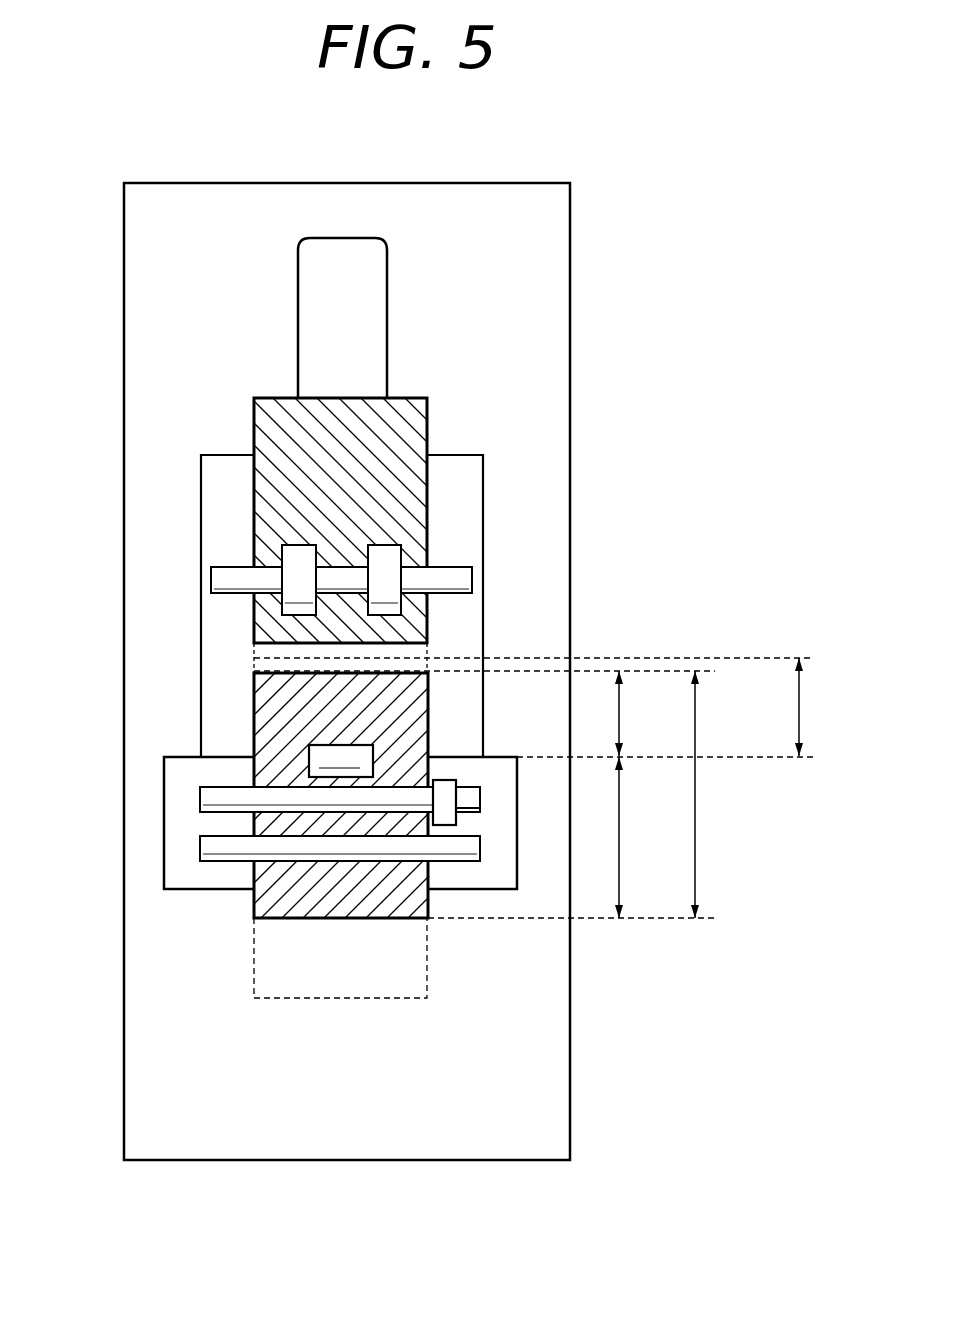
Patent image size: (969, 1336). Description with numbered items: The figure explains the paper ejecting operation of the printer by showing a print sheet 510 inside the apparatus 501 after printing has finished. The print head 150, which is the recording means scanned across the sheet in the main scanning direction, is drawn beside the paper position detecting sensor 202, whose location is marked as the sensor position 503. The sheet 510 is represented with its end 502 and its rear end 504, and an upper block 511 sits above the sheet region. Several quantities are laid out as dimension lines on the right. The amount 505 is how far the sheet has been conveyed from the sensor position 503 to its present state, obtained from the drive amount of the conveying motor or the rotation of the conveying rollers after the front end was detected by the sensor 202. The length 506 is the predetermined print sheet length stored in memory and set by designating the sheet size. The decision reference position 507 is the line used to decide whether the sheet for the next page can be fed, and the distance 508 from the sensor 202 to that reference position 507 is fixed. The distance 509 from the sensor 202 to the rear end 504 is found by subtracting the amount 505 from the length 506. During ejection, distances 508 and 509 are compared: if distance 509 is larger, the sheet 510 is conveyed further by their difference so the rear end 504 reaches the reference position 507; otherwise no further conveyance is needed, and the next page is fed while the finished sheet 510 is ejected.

The housing 501 is at (548, 236).
The upper fixed block 511 is at (405, 404).
The print sheet 510 is at (298, 902).
The paper position detecting sensor 202 is at (327, 755).
The print head 150 is at (447, 796).
The decision reference position 507 is at (557, 657).
The rear end of the print sheet 504 is at (508, 673).
The position of the sensor 503 is at (688, 755).
The end of the print sheet 502 is at (595, 918).
The distance from the sensor to the rear end 509 is at (641, 713).
The conveyed amount 505 is at (641, 837).
The length of the print sheet 506 is at (719, 794).
The distance from the sensor to the decision reference position 508 is at (821, 707).